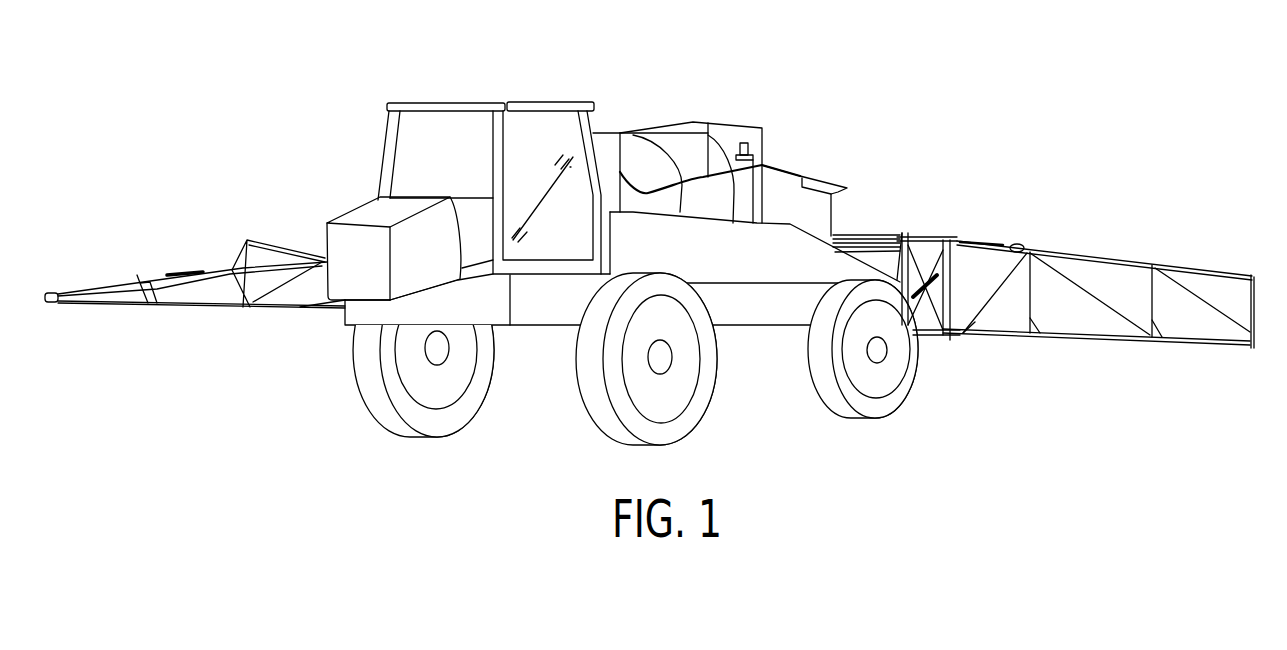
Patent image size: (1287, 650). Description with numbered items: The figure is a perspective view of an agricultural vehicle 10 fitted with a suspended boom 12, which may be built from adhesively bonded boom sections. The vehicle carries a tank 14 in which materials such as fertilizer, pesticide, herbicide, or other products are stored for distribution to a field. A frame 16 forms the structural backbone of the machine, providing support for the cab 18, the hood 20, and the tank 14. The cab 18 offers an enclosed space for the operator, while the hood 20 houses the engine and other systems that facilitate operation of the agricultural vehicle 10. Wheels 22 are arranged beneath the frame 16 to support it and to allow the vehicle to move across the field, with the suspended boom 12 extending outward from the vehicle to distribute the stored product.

The agricultural sprayer 10 is at (641, 244).
The boom assembly 12 is at (1138, 205).
The product tank 14 is at (608, 132).
The chassis 16 is at (762, 328).
The operator cab 18 is at (447, 102).
The engine compartment hood 20 is at (355, 220).
The wheels 22 is at (693, 427).